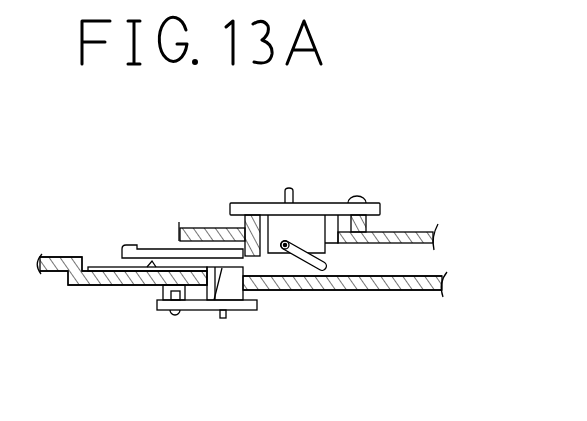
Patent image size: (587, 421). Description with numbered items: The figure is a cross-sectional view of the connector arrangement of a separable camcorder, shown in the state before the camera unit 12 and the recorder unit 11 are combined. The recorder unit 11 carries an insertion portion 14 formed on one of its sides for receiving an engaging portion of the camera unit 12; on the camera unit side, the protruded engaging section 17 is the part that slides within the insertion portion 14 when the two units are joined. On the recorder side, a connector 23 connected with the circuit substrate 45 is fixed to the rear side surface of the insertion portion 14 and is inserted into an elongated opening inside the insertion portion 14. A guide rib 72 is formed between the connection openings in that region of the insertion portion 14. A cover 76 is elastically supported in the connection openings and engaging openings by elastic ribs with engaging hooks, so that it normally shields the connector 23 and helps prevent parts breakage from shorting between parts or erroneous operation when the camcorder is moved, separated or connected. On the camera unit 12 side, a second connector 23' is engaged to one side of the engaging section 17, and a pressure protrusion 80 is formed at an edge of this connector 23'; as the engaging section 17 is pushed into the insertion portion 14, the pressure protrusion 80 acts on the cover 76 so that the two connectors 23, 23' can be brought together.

The recorder unit 11 is at (118, 286).
The camera unit 12 is at (391, 151).
The insertion portion 14 is at (112, 261).
The protruded engaging section 17 is at (420, 232).
The connector 23 is at (200, 325).
The connector 23' is at (301, 301).
The circuit substrate 45 is at (323, 203).
The guide rib 72 is at (151, 271).
The cover 76 is at (143, 258).
The pressure protrusion 80 is at (250, 256).